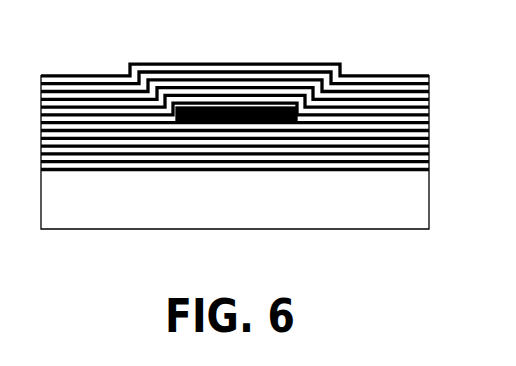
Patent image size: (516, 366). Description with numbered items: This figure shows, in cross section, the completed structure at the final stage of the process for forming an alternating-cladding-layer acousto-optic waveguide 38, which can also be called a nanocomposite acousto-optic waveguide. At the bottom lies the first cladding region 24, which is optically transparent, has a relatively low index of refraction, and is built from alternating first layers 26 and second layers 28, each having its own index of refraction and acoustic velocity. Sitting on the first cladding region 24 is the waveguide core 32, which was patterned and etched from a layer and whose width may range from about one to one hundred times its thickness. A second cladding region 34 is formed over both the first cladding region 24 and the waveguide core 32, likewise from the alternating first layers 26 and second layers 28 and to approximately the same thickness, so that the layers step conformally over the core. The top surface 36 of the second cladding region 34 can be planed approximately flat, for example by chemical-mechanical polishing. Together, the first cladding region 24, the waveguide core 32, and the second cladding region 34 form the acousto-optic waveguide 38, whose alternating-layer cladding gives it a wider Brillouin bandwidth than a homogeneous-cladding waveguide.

The first cladding region 24 is at (431, 165).
The first layers 26 is at (41, 105).
The second layers 28 is at (41, 140).
The waveguide core 32 is at (240, 122).
The second cladding region 34 is at (431, 92).
The top surface 36 is at (76, 75).
The alternating-cladding-layer acousto-optic waveguide 38 is at (153, 236).